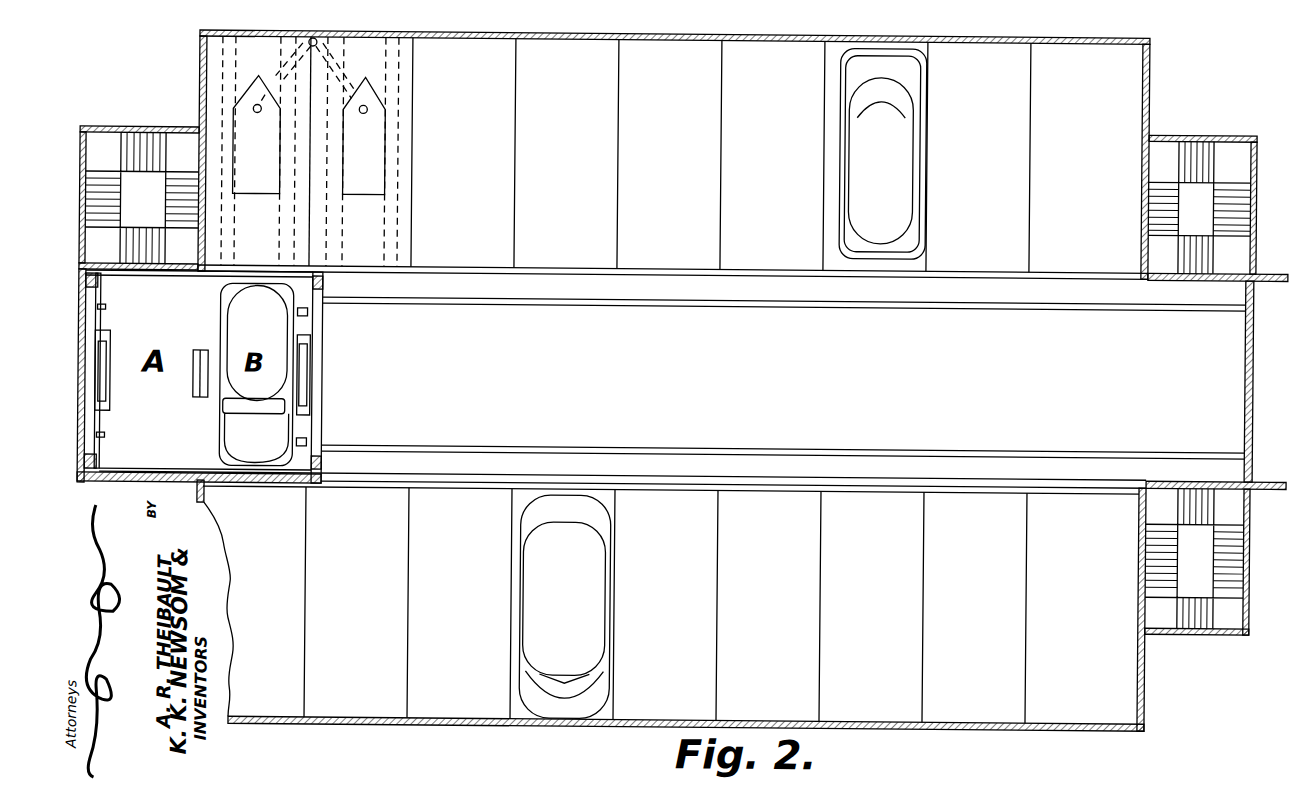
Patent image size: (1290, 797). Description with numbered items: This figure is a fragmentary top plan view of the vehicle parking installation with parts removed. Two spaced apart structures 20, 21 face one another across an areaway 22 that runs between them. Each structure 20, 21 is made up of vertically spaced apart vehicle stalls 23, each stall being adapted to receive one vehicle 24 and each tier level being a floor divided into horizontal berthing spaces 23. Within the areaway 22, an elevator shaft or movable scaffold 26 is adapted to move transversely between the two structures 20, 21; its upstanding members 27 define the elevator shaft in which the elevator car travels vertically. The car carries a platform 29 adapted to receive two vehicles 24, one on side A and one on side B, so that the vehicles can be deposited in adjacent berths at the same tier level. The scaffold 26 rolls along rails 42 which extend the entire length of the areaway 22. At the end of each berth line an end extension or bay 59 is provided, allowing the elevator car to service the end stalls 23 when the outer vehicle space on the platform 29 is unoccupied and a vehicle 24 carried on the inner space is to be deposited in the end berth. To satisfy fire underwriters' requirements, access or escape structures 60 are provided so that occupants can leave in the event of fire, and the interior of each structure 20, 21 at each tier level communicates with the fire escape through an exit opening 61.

The structure 20 is at (1150, 60).
The structure 21 is at (1151, 704).
The areaway 22 is at (682, 276).
The vehicle stalls 23 is at (453, 43).
The vehicle 24 is at (890, 162).
The elevator shaft or movable scaffold 26 is at (317, 370).
The upstanding members 27 is at (100, 276).
The platform 29 is at (205, 464).
The rails 42 is at (548, 299).
The end extension or bay 59 is at (172, 275).
The access or escape structures 60 is at (145, 126).
The exit opening 61 is at (196, 145).